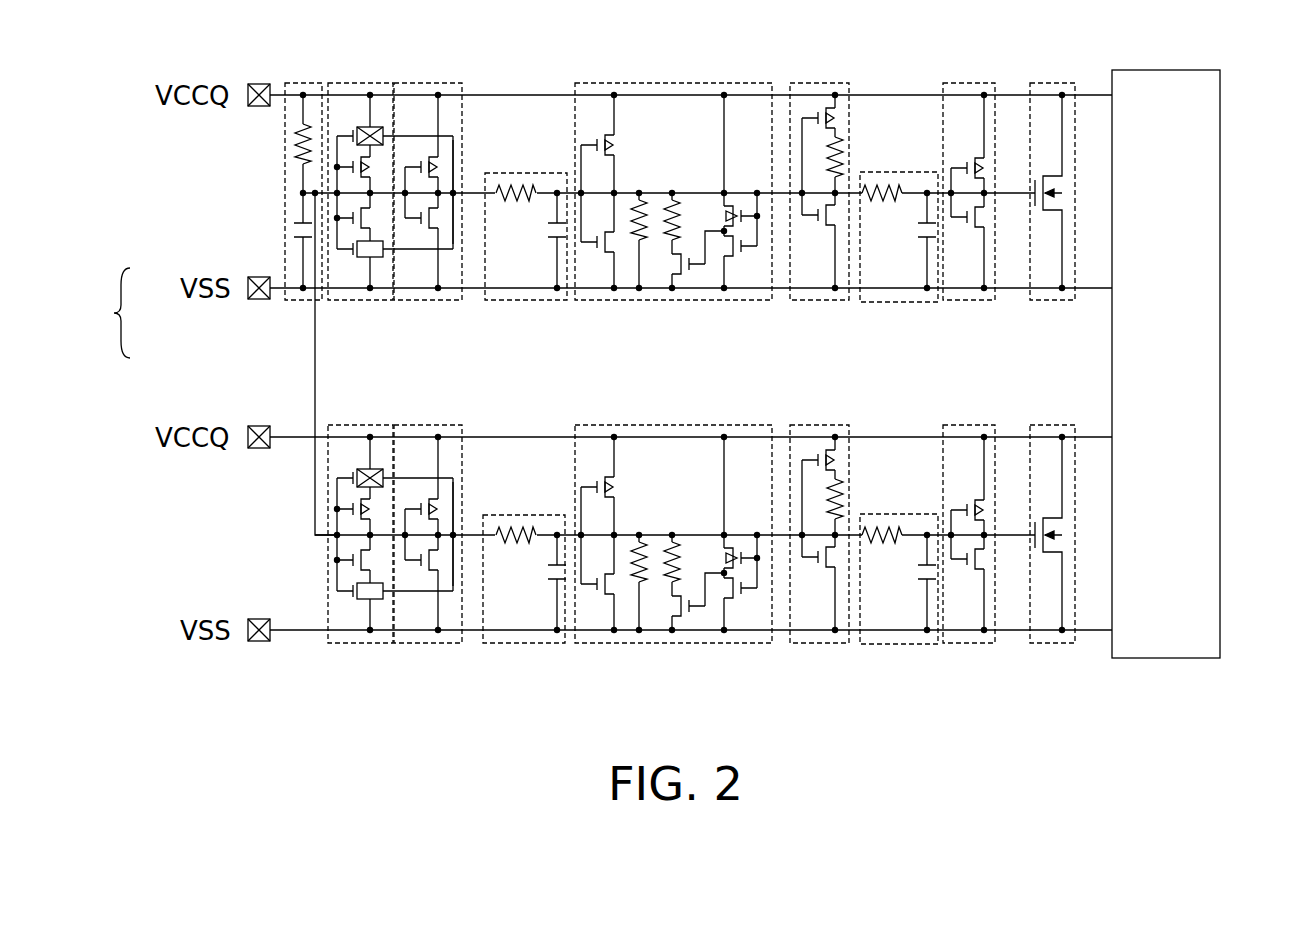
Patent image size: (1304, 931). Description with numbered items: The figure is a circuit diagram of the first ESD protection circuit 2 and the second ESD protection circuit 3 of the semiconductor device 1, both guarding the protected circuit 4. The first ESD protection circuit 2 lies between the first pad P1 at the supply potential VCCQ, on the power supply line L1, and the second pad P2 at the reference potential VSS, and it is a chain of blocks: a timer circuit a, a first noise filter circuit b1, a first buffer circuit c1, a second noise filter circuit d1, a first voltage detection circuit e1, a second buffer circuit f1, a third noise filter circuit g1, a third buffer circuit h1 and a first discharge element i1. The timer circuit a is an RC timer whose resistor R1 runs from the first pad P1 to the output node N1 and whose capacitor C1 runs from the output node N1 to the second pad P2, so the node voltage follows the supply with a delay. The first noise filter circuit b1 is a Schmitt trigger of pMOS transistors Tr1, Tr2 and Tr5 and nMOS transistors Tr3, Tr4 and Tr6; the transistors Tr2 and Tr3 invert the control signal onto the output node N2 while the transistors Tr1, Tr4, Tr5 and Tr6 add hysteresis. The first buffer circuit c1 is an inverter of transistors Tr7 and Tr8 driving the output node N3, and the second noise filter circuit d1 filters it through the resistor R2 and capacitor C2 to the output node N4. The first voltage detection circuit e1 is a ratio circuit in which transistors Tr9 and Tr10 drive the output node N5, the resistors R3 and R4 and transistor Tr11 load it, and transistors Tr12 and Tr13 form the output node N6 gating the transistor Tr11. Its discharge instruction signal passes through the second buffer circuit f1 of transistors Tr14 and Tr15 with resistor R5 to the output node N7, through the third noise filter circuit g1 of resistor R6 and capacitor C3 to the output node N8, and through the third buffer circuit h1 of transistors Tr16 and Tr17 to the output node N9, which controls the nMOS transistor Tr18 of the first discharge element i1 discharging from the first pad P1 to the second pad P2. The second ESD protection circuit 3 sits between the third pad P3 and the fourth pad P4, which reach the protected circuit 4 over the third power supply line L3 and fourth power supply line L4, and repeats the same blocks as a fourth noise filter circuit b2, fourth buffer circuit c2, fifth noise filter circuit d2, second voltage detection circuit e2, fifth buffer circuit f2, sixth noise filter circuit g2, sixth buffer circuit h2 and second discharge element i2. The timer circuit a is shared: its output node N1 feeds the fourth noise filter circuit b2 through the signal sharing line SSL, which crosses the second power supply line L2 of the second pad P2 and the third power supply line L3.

The semiconductor device 1 is at (113, 313).
The first ESD protection circuit 2 is at (180, 238).
The second ESD protection circuit 3 is at (181, 389).
The protected circuit 4 is at (1220, 362).
The first pad P1 is at (262, 84).
The second pad P2 is at (259, 300).
The third pad P3 is at (262, 426).
The fourth pad P4 is at (259, 642).
The resistor R1 is at (295, 142).
The resistor R2 is at (510, 188).
The resistor R3 is at (639, 198).
The resistor R4 is at (672, 198).
The resistor R5 is at (843, 155).
The resistor R6 is at (893, 185).
The capacitor C1 is at (295, 232).
The capacitor C2 is at (553, 232).
The capacitor C3 is at (923, 235).
The output node N1 is at (300, 193).
The output node N2 is at (335, 193).
The output node N3 is at (445, 190).
The output node N4 is at (556, 197).
The output node N5 is at (612, 187).
The output node N6 is at (713, 236).
The output node N7 is at (840, 200).
The output node N8 is at (926, 198).
The output node N9 is at (988, 193).
The signal sharing line SSL is at (313, 490).
The line L1 is at (668, 95).
The second power supply line L2 is at (752, 300).
The third power supply line L3 is at (662, 437).
The fourth power supply line L4 is at (752, 643).
The transistor Tr1 is at (354, 132).
The transistor Tr2 is at (360, 163).
The transistor Tr3 is at (423, 222).
The transistor Tr4 is at (364, 215).
The transistor Tr5 is at (373, 127).
The transistor Tr6 is at (370, 258).
The transistor Tr7 is at (460, 168).
The transistor Tr8 is at (458, 215).
The transistor Tr9 is at (622, 145).
The transistor Tr10 is at (615, 245).
The transistor Tr11 is at (688, 266).
The transistor Tr12 is at (738, 213).
The transistor Tr13 is at (740, 250).
The transistor Tr14 is at (838, 118).
The transistor Tr15 is at (842, 218).
The transistor Tr16 is at (986, 163).
The transistor Tr17 is at (988, 220).
The transistor Tr18 is at (1055, 185).
The timer circuit a is at (298, 302).
The first noise filter circuit b1 is at (365, 302).
The fourth noise filter circuit b2 is at (365, 645).
The first buffer circuit c1 is at (436, 302).
The fourth buffer circuit c2 is at (436, 645).
The second noise filter circuit d1 is at (522, 302).
The fifth noise filter circuit d2 is at (522, 645).
The first voltage detection circuit e1 is at (688, 302).
The second voltage detection circuit e2 is at (688, 645).
The second buffer circuit f1 is at (822, 302).
The fifth buffer circuit f2 is at (822, 645).
The third noise filter circuit g1 is at (906, 304).
The sixth noise filter circuit g2 is at (906, 646).
The third buffer circuit h1 is at (970, 302).
The sixth buffer circuit h2 is at (970, 645).
The first discharge element i1 is at (1060, 302).
The second discharge element i2 is at (1060, 645).